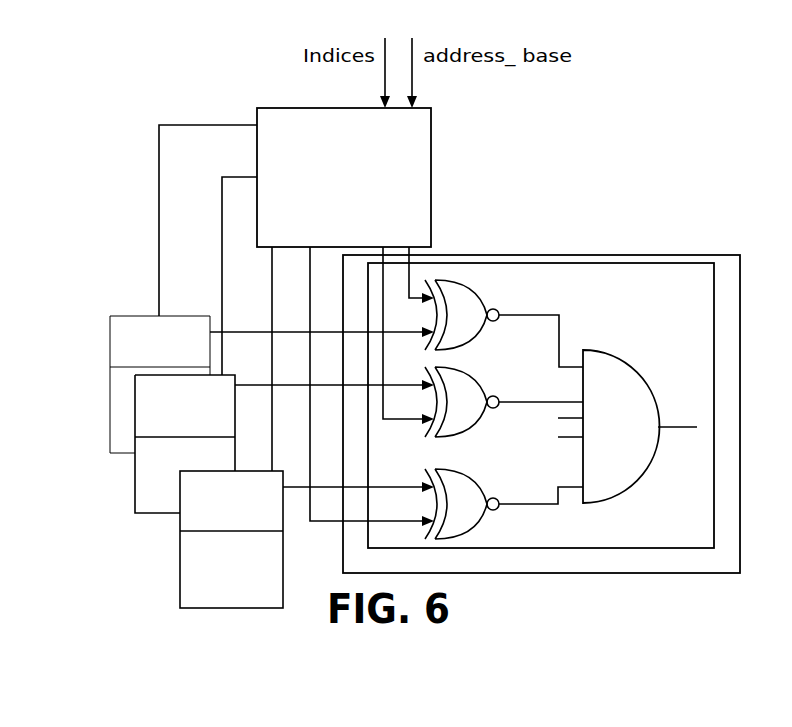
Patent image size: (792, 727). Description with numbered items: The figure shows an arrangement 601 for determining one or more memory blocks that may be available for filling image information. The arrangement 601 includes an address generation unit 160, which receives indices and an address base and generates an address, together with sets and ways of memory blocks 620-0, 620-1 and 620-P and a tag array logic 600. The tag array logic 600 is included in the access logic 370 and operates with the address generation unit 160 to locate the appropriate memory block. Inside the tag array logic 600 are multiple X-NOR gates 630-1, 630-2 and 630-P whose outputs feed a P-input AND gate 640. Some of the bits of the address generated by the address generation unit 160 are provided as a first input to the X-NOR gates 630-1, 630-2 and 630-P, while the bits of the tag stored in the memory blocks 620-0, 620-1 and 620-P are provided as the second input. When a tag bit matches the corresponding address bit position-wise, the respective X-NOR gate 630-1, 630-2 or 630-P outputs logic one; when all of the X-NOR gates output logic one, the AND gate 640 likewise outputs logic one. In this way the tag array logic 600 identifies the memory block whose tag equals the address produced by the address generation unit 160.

The address generation unit 160 is at (328, 207).
The arrangement 601 is at (497, 162).
The access logic 370 is at (573, 255).
The tag array logic 600 is at (688, 292).
The set W tag 0 620-0 is at (197, 364).
The memory block 620-1 is at (220, 425).
The memory block 620-P is at (267, 521).
The X-NOR gate 630-1 is at (470, 308).
The X-NOR gate 630-2 is at (475, 388).
The X-NOR gate 630-P is at (476, 495).
The P-input AND gate 640 is at (635, 434).